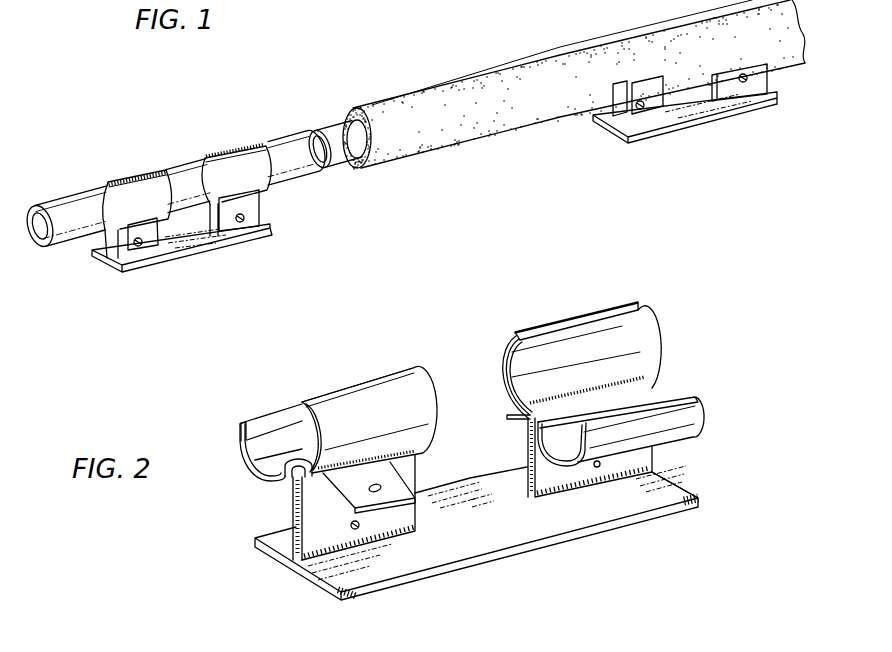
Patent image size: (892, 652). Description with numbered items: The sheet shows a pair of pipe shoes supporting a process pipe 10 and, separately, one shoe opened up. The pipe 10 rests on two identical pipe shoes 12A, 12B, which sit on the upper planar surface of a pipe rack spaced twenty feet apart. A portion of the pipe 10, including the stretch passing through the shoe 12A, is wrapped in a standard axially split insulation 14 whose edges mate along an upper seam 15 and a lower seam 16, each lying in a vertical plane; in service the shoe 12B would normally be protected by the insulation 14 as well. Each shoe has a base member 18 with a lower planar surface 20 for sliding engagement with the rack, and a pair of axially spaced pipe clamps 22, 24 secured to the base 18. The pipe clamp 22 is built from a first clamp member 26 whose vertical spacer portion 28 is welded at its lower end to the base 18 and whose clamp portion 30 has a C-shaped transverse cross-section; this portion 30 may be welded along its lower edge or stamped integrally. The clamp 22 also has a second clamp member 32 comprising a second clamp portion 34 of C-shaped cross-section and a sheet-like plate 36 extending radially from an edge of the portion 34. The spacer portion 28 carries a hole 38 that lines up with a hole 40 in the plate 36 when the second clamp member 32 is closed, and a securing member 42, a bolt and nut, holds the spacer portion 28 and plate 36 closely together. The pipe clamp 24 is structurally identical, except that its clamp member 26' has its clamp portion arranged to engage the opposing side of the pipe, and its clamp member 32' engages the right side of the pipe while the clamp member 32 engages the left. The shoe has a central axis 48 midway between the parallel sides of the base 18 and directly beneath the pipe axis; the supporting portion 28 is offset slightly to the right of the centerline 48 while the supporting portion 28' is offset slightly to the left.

In FIG. 1, the process pipe 10 is at (295, 137).
In FIG. 1, the pipe shoe 12A is at (702, 107).
In FIG. 1, the pipe shoe 12B is at (220, 238).
In FIG. 1, the axially split insulation 14 is at (523, 120).
In FIG. 1, the upper seam 15 is at (492, 75).
In FIG. 1, the lower seam 16 is at (368, 167).
In FIG. 1, the base member 18 is at (182, 248).
In FIG. 2, the base member 18 is at (395, 563).
In FIG. 2, the lower planar surface 20 is at (478, 567).
In FIG. 1, the pipe clamp 22 is at (128, 163).
In FIG. 2, the pipe clamp 22 is at (332, 373).
In FIG. 1, the pipe clamp 24 is at (230, 140).
In FIG. 2, the pipe clamp 24 is at (582, 305).
In FIG. 1, the first clamp member 26 is at (82, 260).
In FIG. 2, the first clamp member 26 is at (257, 527).
In FIG. 1, the first clamp member 26' is at (270, 213).
In FIG. 2, the first clamp member 26' is at (594, 360).
In FIG. 2, the vertical spacer portion 28 is at (328, 533).
In FIG. 2, the supporting portion 28' is at (579, 506).
In FIG. 2, the clamp portion 30 is at (413, 387).
In FIG. 2, the second clamp member 32 is at (252, 450).
In FIG. 2, the second clamp member 32' is at (649, 431).
In FIG. 2, the second clamp portion 34 is at (240, 427).
In FIG. 2, the sheet-like plate 36 is at (347, 472).
In FIG. 2, the hole 38 is at (355, 528).
In FIG. 2, the hole 40 is at (381, 487).
In FIG. 1, the securing member 42 is at (140, 247).
In FIG. 2, the central axis 48 is at (713, 447).